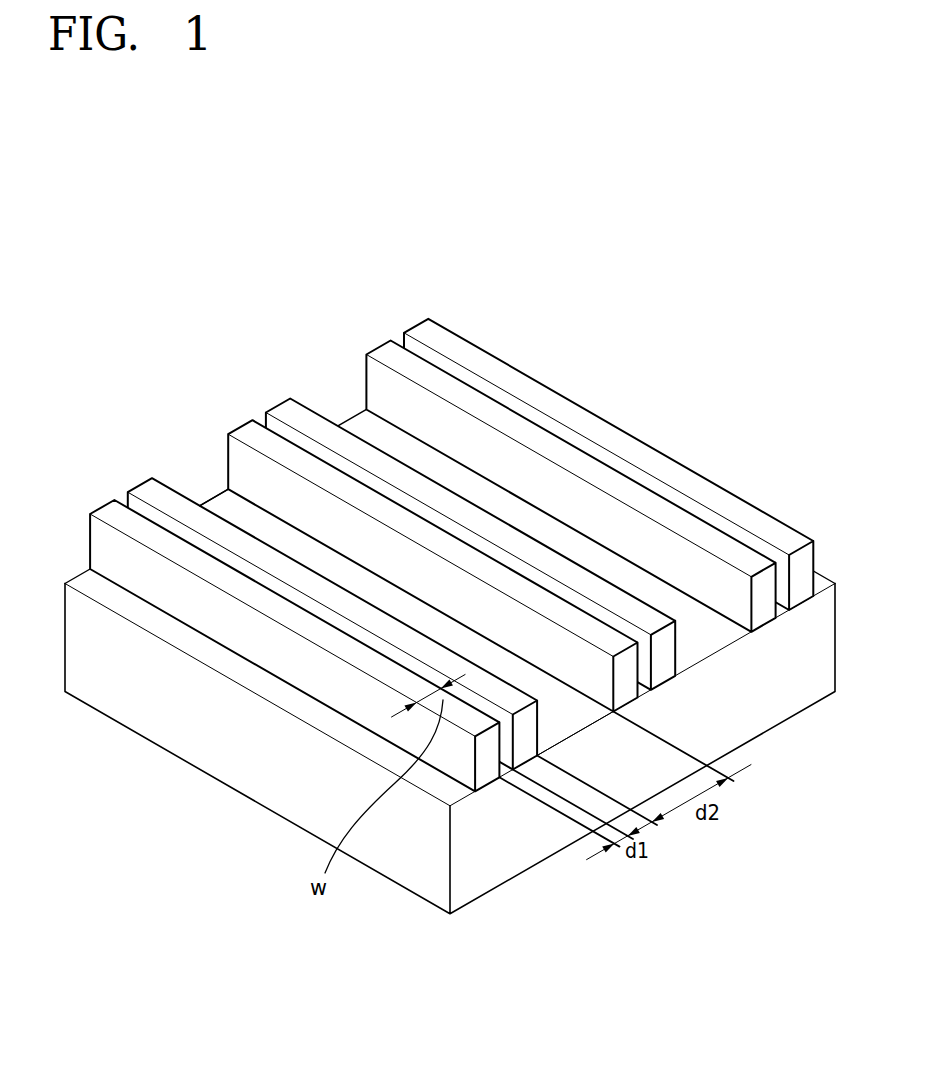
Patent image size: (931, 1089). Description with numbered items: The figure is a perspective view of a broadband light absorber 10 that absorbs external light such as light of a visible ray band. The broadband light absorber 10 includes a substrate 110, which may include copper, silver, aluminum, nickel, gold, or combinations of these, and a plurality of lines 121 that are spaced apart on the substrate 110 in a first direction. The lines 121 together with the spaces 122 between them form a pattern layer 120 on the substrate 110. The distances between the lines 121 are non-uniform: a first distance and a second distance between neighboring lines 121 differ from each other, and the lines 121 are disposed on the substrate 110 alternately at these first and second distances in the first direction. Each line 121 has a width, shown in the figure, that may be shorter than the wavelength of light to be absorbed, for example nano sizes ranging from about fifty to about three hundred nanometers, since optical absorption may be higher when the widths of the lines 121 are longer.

The broadband light absorber 10 is at (450, 596).
The substrate 110 is at (268, 769).
The pattern layer 120 is at (451, 534).
The lines 121 is at (388, 360).
The spaces 122 is at (393, 563).